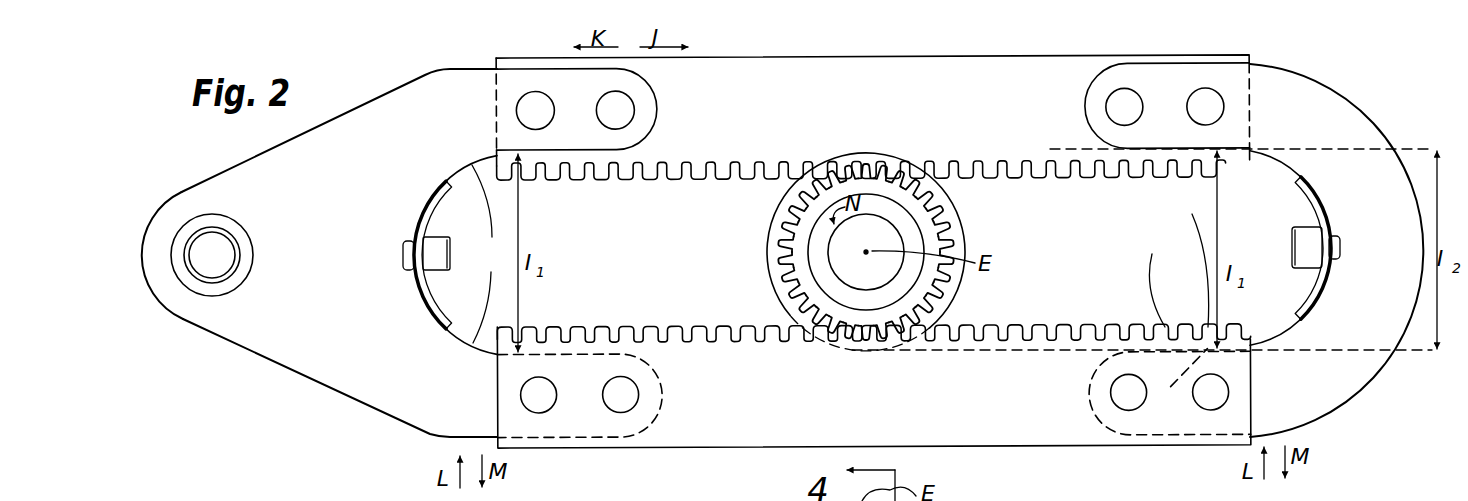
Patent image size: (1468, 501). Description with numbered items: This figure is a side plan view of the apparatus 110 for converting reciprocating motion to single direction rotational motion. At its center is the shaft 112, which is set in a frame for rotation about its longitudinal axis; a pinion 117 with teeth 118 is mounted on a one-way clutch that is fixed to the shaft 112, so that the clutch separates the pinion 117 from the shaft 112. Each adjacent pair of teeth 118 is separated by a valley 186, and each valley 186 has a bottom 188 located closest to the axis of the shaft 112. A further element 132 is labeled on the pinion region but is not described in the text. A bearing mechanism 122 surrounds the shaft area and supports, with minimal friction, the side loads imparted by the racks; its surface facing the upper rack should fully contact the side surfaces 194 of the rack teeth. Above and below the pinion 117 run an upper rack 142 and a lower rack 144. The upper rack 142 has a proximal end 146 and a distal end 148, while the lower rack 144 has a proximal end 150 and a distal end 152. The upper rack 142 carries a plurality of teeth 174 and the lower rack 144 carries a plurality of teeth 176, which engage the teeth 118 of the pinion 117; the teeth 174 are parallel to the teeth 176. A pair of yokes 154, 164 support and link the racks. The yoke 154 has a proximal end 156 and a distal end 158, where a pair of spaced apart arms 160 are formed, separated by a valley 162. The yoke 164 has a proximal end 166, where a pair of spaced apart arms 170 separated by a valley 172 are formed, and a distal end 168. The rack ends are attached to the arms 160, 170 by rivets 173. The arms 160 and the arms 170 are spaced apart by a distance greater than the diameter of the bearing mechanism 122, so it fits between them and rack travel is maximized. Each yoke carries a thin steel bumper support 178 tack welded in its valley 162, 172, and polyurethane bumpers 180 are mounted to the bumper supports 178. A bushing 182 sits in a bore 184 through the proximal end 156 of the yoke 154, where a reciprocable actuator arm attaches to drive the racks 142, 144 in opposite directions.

The apparatus 110 is at (1089, 43).
The shaft 112 is at (897, 276).
The pinion 117 is at (944, 211).
The teeth 118 is at (782, 256).
The bearing mechanism 122 is at (950, 313).
The gear tooth 132 is at (948, 230).
The upper rack 142 is at (742, 53).
The lower rack 144 is at (1045, 450).
The proximal end 146 is at (514, 57).
The distal end 148 is at (1234, 54).
The proximal end 150 is at (580, 450).
The distal end 152 is at (1178, 448).
The yoke 154 is at (311, 125).
The proximal end 156 is at (174, 197).
The distal end 158 is at (622, 152).
The spaced apart arms 160 is at (553, 133).
The valley 162 is at (459, 255).
The yoke 164 is at (1326, 77).
The proximal end 166 is at (1139, 148).
The distal end 168 is at (1415, 149).
The spaced apart arms 170 is at (1190, 130).
The valley 172 is at (1279, 275).
The rivets 173 is at (522, 96).
The teeth 174 is at (748, 163).
The teeth 176 is at (620, 327).
The bumper support 178 is at (429, 207).
The polyurethane bumpers 180 is at (428, 271).
The bushing 182 is at (245, 268).
The bore 184 is at (214, 299).
The valley 186 is at (784, 268).
The bottom 188 is at (811, 220).
The side surfaces 194 is at (945, 163).